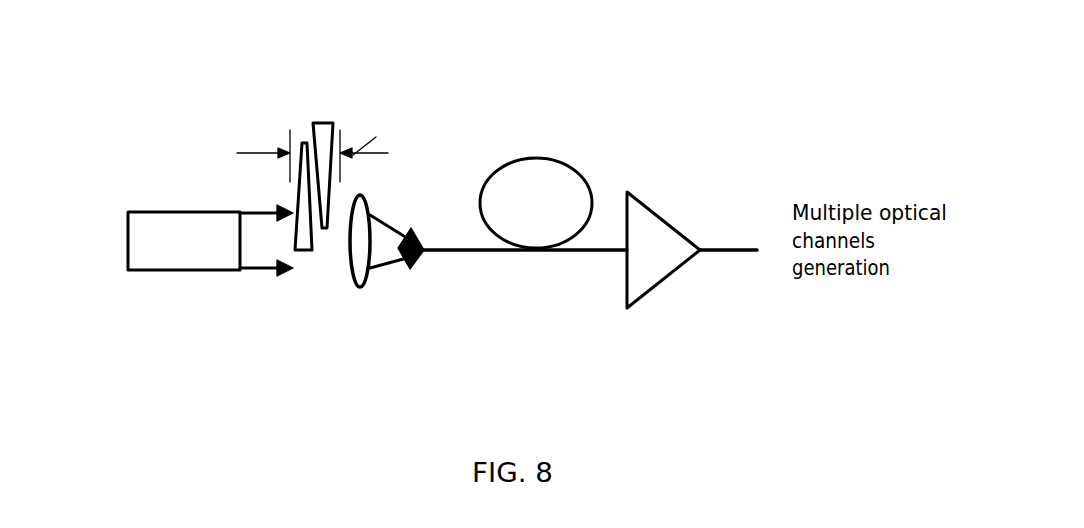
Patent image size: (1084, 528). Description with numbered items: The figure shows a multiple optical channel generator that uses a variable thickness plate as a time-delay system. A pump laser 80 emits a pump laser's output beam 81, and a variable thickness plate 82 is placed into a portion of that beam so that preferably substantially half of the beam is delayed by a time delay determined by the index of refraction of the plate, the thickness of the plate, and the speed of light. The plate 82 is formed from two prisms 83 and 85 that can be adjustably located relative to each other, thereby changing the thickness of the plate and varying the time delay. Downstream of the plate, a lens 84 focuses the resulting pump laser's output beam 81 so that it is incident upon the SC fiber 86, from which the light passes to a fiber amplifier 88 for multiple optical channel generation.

The pump laser 80 is at (128, 230).
The pump laser's output beam 81 is at (275, 210).
The variable thickness plate 82 is at (372, 203).
The prism 83 is at (326, 230).
The lens 84 is at (370, 277).
The prism 85 is at (301, 255).
The SC fiber 86 is at (508, 163).
The fiber amplifier 88 is at (663, 218).